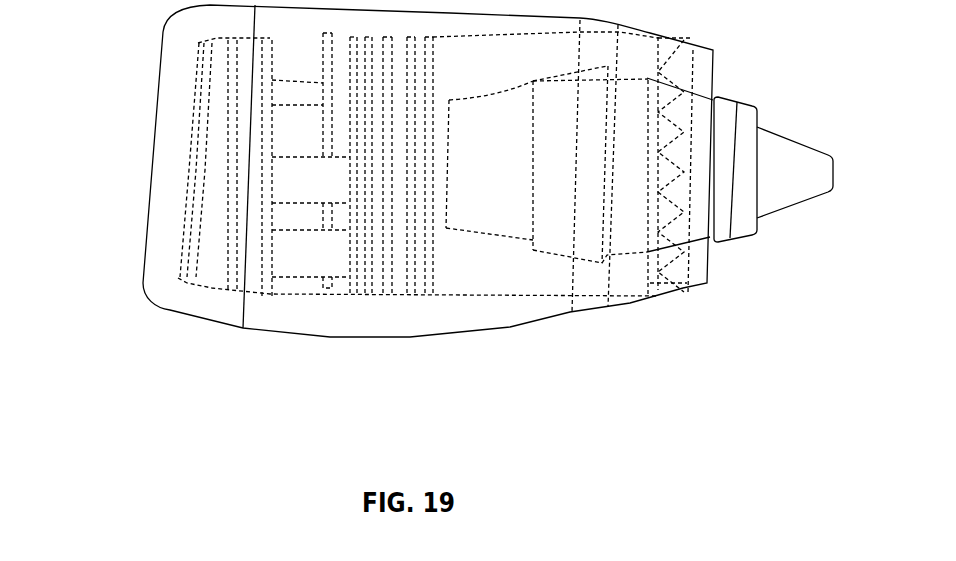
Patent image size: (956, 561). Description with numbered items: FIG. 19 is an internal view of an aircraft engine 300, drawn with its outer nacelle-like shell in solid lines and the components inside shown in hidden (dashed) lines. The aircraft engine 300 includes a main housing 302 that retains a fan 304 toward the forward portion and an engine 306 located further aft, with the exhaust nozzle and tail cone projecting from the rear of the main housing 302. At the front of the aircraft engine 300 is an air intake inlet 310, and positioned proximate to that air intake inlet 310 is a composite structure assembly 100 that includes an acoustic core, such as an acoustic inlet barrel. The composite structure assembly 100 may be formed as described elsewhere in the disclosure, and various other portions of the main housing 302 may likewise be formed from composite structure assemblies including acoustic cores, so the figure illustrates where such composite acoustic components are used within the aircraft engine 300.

The composite structure assembly 100 is at (148, 207).
The aircraft engine 300 is at (143, 399).
The main housing 302 is at (537, 323).
The fan 304 is at (390, 295).
The engine 306 is at (505, 268).
The air intake inlet 310 is at (212, 267).